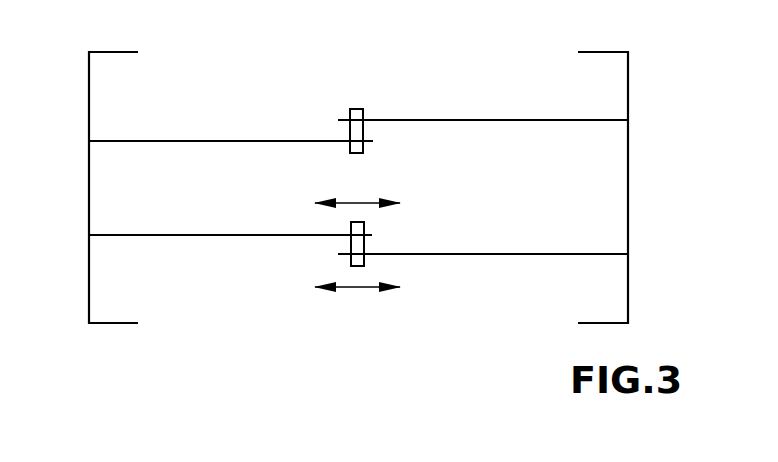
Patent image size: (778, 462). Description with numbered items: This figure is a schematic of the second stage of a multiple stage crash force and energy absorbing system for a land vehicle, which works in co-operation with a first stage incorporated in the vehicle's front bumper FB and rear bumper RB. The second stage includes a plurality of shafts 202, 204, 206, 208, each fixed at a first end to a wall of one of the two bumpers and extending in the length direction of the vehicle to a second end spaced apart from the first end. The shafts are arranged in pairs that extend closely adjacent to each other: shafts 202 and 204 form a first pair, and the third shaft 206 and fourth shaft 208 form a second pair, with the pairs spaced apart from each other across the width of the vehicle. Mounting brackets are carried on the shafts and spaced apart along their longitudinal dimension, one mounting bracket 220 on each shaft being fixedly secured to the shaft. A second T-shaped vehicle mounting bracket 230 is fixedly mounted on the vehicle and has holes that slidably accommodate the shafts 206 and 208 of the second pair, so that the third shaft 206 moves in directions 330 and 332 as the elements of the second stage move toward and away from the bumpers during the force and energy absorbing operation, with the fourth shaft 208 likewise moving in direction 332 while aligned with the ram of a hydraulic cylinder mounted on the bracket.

The front bumper FB is at (89, 95).
The rear bumper RB is at (629, 78).
The shaft 202 is at (200, 140).
The shaft 204 is at (503, 119).
The third shaft 206 is at (205, 237).
The fourth shaft 208 is at (505, 255).
The mounting bracket 220 is at (357, 112).
The second T-shaped vehicle mounting bracket 230 is at (357, 244).
The direction 330 is at (381, 197).
The direction 332 is at (328, 197).